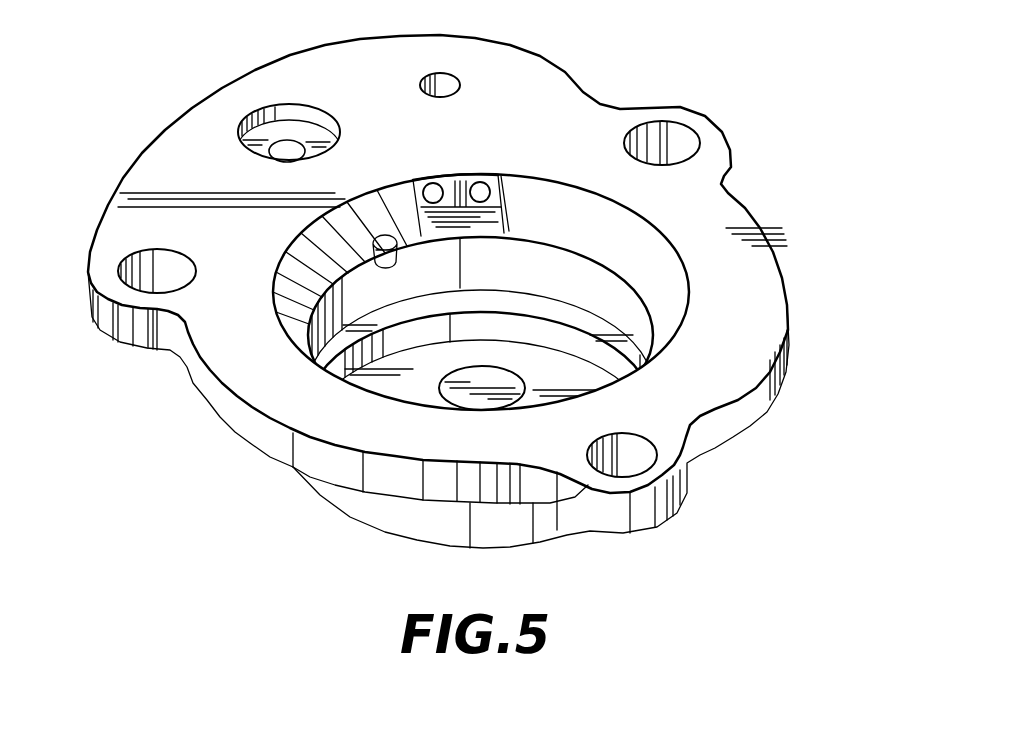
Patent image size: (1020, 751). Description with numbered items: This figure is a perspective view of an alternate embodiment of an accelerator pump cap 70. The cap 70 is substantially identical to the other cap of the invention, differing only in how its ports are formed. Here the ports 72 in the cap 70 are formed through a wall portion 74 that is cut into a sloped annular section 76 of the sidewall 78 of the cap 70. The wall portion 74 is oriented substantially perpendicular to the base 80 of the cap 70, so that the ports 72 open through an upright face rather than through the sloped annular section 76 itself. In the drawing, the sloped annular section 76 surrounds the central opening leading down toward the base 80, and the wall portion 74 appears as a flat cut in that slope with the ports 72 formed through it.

The cover flange body 70 is at (477, 291).
The pin holes 72 is at (478, 182).
The recessed pocket 74 is at (420, 180).
The flange top surface 76 is at (623, 237).
The tapered counterbore 78 is at (527, 283).
The central bore opening 80 is at (425, 385).